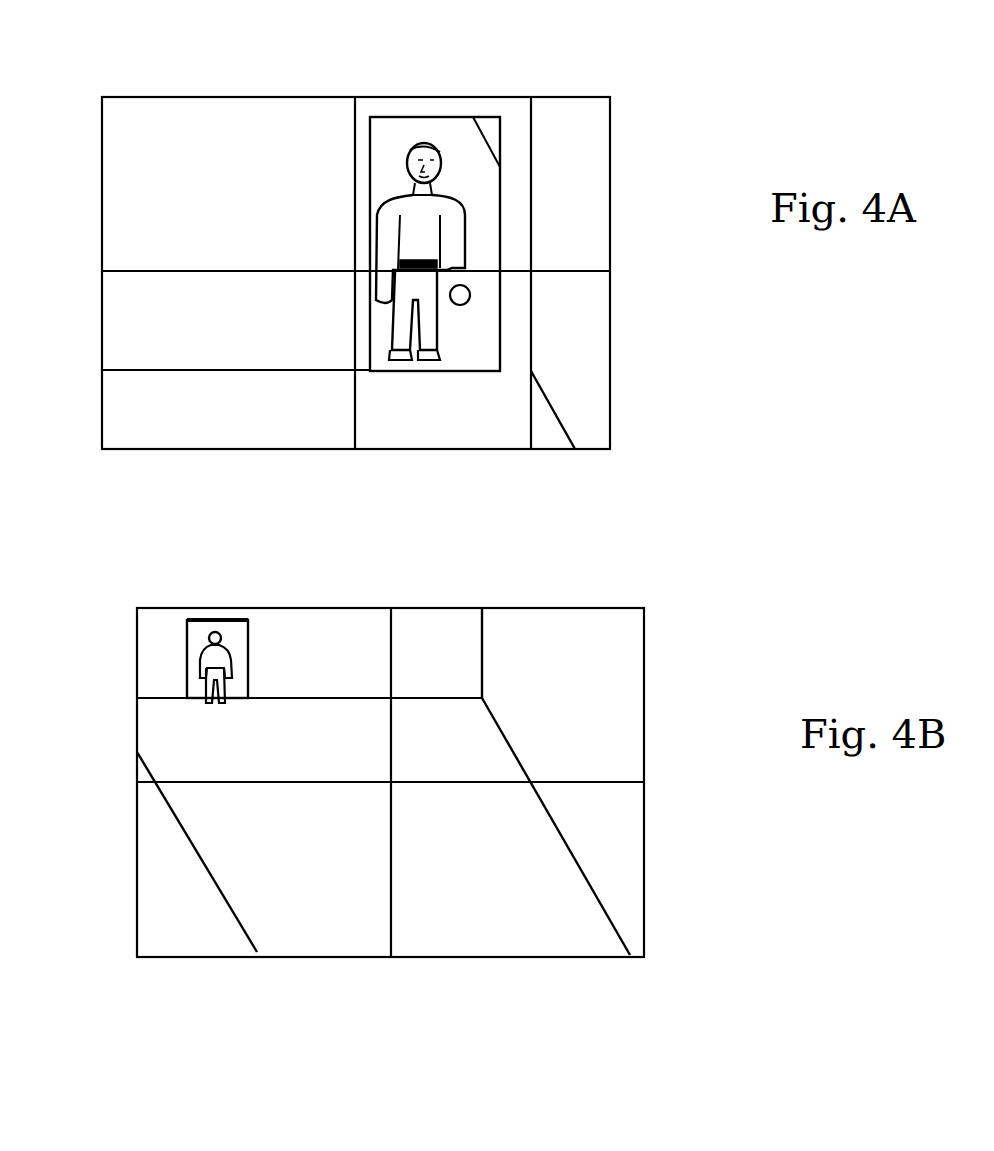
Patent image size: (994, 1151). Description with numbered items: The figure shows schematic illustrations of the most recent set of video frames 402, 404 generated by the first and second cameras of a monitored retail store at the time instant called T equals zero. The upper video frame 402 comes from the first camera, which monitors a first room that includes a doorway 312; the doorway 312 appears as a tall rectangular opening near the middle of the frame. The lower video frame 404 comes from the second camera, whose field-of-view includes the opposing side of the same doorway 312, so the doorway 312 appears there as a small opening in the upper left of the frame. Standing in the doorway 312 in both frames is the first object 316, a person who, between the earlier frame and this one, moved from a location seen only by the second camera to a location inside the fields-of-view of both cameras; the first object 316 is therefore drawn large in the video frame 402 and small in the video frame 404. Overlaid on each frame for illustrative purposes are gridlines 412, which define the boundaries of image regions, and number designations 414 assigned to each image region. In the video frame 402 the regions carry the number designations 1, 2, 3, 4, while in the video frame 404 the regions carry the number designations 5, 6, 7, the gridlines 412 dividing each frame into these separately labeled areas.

In FIG. 4A, the video frame 402 is at (317, 273).
In FIG. 4B, the video frame 404 is at (350, 782).
In FIG. 4A, the doorway 312 is at (503, 209).
In FIG. 4B, the doorway 312 is at (247, 627).
In FIG. 4A, the first object 316 is at (383, 192).
In FIG. 4B, the first object 316 is at (195, 645).
In FIG. 4A, the gridlines 412 is at (363, 407).
In FIG. 4B, the gridlines 412 is at (392, 918).
In FIG. 4A, the number designations 414 is at (328, 122).
In FIG. 4B, the number designations 414 is at (348, 627).
In FIG. 4A, the image region designation 1 is at (323, 143).
In FIG. 4A, the image region designation 2 is at (559, 145).
In FIG. 4A, the image region designation 3 is at (387, 300).
In FIG. 4A, the image region designation 4 is at (715, 405).
In FIG. 4B, the image region designation 5 is at (363, 643).
In FIG. 4B, the image region designation 6 is at (600, 731).
In FIG. 4B, the image region designation 7 is at (672, 1008).